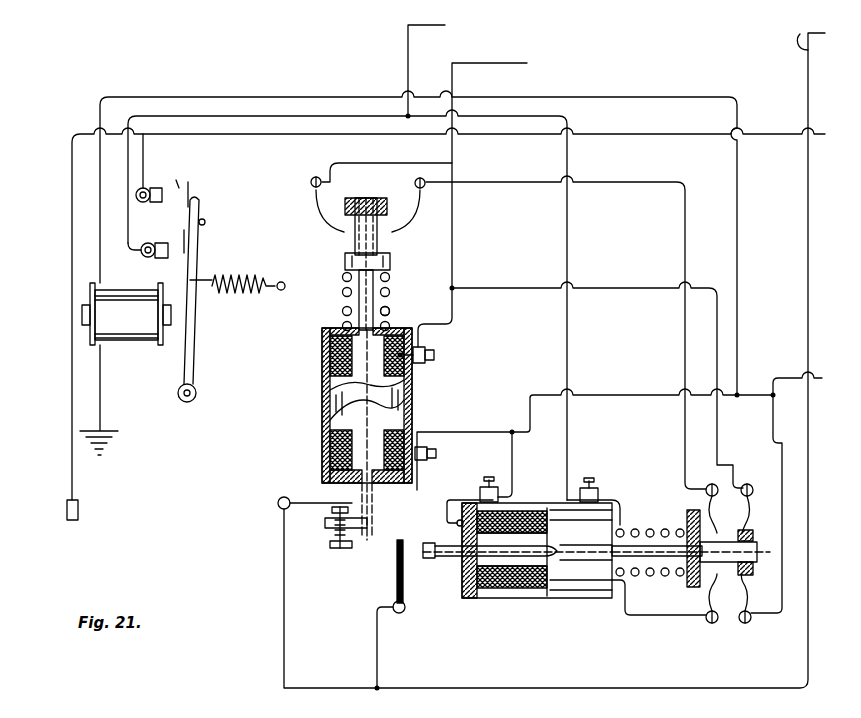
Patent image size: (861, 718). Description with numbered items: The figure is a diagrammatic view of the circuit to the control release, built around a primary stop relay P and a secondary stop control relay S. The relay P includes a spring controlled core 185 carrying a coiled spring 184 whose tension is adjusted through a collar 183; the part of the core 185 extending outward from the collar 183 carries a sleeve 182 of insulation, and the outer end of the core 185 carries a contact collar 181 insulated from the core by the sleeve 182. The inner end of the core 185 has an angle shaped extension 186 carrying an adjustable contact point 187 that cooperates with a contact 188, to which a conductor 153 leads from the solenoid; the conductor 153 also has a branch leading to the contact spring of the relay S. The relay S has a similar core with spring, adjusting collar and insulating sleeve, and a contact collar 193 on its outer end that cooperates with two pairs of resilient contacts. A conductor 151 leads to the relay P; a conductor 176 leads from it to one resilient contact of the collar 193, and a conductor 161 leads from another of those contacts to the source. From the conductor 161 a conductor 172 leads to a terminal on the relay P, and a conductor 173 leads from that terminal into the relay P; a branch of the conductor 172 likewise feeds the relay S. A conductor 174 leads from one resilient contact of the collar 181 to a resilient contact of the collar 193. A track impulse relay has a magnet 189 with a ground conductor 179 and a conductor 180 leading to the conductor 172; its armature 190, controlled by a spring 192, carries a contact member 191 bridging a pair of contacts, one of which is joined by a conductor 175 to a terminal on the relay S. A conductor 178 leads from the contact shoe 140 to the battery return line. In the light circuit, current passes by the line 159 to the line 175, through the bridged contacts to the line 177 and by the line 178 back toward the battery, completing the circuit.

The contact shoe 140 is at (78, 510).
The conductor 151 is at (420, 338).
The conductor 153 is at (380, 650).
The line 159 is at (441, 68).
The conductor 161 is at (788, 372).
The conductor 172 is at (432, 432).
The conductor 173 is at (440, 482).
The conductor 174 is at (362, 160).
The conductor 175 is at (128, 230).
The conductor 176 is at (475, 284).
The line 177 is at (143, 152).
The conductor 178 is at (72, 150).
The ground conductor 179 is at (100, 396).
The conductor 180 is at (100, 270).
The contact collar 181 is at (352, 198).
The sleeve of insulation 182 is at (388, 242).
The collar 183 is at (390, 262).
The coiled spring 184 is at (392, 290).
The core 185 is at (392, 310).
The angle shaped extension 186 is at (372, 522).
The adjustable contact point 187 is at (340, 550).
The contact 188 is at (300, 502).
The magnet 189 is at (132, 336).
The armature 190 is at (196, 348).
The contact member 191 is at (206, 242).
The controlling spring 192 is at (246, 294).
The contact collar 193 is at (710, 484).
The primary stop relay P is at (322, 392).
The secondary stop control relay S is at (548, 600).